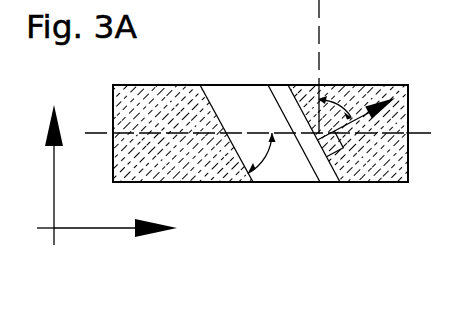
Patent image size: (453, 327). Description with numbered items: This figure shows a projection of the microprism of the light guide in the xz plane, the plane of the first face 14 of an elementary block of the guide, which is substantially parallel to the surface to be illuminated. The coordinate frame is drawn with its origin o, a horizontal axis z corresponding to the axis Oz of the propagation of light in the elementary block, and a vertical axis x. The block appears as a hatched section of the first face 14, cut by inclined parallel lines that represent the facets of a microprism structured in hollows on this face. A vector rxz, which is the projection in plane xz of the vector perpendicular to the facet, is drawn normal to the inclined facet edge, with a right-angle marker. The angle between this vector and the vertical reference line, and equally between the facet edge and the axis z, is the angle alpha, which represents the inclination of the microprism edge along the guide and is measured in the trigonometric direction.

The first face 14 is at (177, 102).
The x axis x is at (47, 164).
The z axis z is at (115, 239).
The origin o is at (45, 238).
The projection of perpendicular vector r in plane xz rxz is at (347, 124).